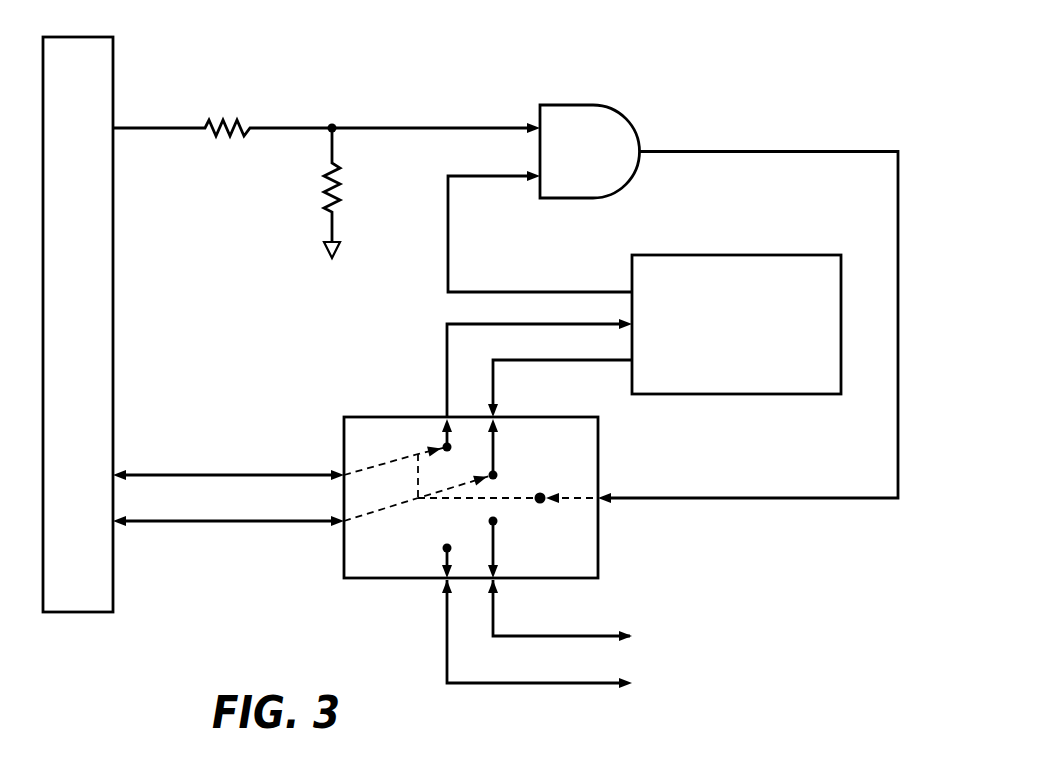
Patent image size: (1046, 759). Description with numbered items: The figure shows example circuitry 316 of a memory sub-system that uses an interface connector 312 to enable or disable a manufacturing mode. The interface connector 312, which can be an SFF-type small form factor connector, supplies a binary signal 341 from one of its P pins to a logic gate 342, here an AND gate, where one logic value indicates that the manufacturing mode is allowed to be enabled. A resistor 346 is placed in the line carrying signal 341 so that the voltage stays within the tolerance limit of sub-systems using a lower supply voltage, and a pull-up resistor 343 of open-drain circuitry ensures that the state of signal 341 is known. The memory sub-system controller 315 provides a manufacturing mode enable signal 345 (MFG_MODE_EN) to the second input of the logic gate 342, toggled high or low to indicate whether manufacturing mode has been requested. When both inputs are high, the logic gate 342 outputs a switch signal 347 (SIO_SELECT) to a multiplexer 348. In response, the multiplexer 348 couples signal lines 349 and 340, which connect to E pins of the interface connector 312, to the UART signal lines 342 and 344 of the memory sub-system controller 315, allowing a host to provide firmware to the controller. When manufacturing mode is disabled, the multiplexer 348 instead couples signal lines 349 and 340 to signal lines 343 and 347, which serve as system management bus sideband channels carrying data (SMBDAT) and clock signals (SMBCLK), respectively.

The interface connector 312 is at (78, 42).
The memory sub-system controller 315 is at (748, 262).
The circuitry 316 is at (833, 34).
The signal line 340 is at (207, 523).
The signal 341 is at (449, 125).
The logic gate 342 is at (585, 112).
The pull-up resistor 343 is at (322, 197).
The signal line 344 is at (494, 378).
The manufacturing mode enable signal 345 is at (447, 265).
The resistor 346 is at (243, 126).
The switch signal 347 is at (780, 151).
The multiplexer 348 is at (403, 425).
The signal line 349 is at (207, 474).